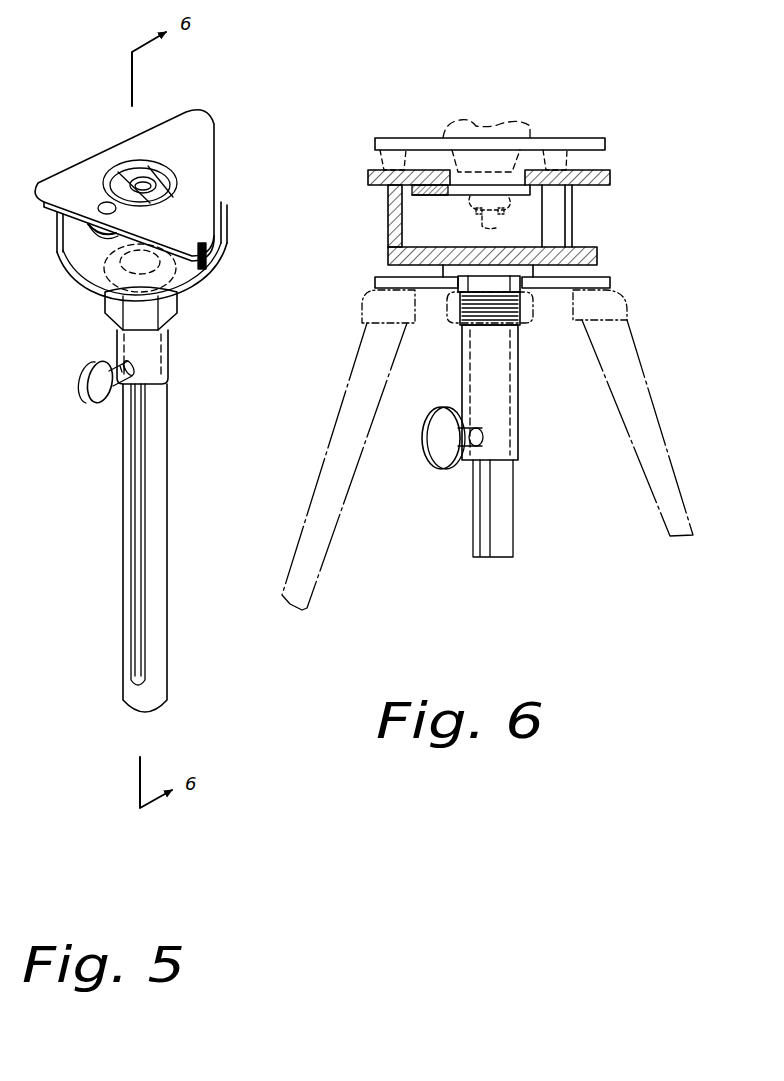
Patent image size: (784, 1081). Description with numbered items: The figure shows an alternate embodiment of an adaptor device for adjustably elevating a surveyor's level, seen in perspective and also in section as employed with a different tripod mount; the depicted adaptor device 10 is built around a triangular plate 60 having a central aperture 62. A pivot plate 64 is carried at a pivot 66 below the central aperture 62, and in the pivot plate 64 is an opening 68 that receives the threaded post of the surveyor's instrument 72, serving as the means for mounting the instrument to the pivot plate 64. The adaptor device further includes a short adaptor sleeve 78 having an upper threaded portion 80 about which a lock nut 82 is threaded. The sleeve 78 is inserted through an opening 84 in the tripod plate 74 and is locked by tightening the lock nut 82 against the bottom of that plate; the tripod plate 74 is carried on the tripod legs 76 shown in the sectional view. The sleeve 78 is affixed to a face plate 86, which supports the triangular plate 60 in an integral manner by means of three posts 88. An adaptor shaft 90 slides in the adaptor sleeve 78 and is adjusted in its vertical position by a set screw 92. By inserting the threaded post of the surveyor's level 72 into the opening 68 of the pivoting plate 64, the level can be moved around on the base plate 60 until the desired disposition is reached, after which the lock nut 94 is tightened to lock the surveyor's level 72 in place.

In FIG. 6, the camera mount assembly 10 is at (500, 228).
In FIG. 5, the triangular plate 60 is at (216, 160).
In FIG. 6, the triangular plate 60 is at (610, 176).
In FIG. 5, the central aperture 62 is at (156, 176).
In FIG. 5, the pivot plate 64 is at (120, 170).
In FIG. 5, the pivot 66 is at (100, 208).
In FIG. 5, the opening 68 is at (146, 176).
In FIG. 6, the surveyor's instrument 72 is at (605, 146).
In FIG. 6, the tripod plate 74 is at (610, 284).
In FIG. 6, the tripod leg 76 is at (676, 318).
In FIG. 5, the adaptor sleeve 78 is at (172, 352).
In FIG. 6, the adaptor sleeve 78 is at (490, 392).
In FIG. 6, the upper threaded portion 80 is at (482, 322).
In FIG. 5, the lock nut 82 is at (104, 304).
In FIG. 6, the lock nut 82 is at (533, 312).
In FIG. 6, the opening 84 is at (458, 287).
In FIG. 5, the face plate 86 is at (230, 236).
In FIG. 5, the posts 88 is at (206, 258).
In FIG. 6, the posts 88 is at (388, 226).
In FIG. 5, the adaptor shaft 90 is at (170, 484).
In FIG. 6, the adaptor shaft 90 is at (493, 508).
In FIG. 5, the set screw 92 is at (96, 402).
In FIG. 6, the set screw 92 is at (452, 438).
In FIG. 6, the lock nut 94 is at (468, 206).